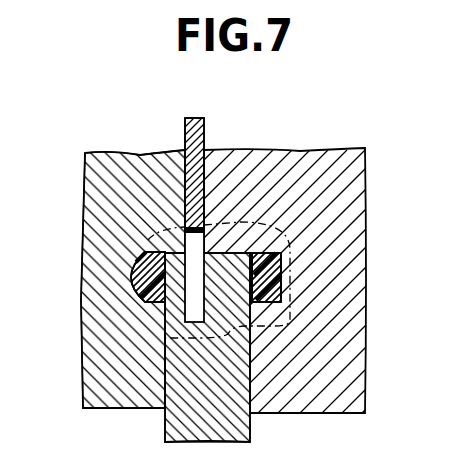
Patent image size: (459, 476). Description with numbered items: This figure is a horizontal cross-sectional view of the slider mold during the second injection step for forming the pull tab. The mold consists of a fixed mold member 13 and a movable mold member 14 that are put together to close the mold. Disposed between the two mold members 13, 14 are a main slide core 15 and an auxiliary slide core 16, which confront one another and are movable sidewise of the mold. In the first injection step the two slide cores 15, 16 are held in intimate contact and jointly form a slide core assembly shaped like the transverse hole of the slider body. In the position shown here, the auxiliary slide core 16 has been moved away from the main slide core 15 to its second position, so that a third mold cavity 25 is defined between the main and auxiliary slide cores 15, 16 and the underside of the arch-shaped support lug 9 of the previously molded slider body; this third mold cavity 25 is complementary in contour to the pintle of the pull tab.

The fixed mold member 13 is at (121, 158).
The movable mold member 14 is at (272, 158).
The main slide core 15 is at (235, 433).
The auxiliary slide core 16 is at (200, 142).
The third mold cavity 25 is at (190, 274).
The support lug 9 is at (287, 283).